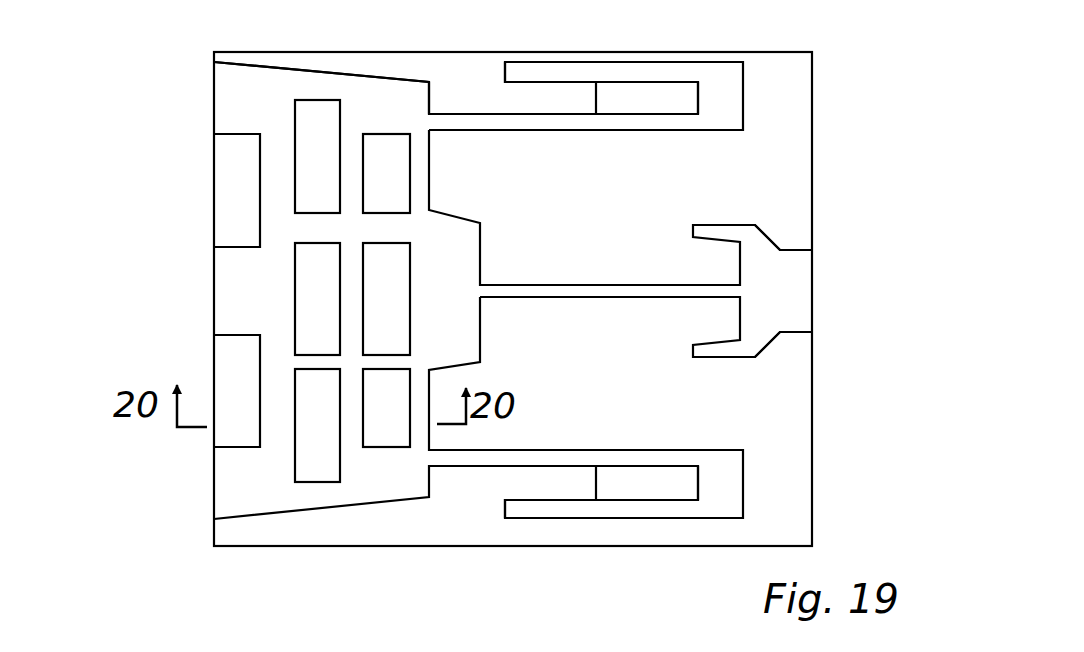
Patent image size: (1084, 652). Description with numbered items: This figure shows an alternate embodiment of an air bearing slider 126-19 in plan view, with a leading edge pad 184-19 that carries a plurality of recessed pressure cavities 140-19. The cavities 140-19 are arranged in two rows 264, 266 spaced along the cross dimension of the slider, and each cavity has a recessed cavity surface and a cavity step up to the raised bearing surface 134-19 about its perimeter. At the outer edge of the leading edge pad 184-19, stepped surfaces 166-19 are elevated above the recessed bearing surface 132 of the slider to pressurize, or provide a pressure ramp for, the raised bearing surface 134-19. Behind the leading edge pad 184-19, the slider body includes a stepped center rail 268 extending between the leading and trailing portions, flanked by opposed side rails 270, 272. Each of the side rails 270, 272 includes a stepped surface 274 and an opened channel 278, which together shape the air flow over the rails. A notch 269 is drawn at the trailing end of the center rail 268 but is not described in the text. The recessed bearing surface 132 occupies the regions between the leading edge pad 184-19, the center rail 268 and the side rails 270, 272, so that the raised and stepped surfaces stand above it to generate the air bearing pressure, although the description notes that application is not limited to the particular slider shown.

The slider 126-19 is at (591, 50).
The recessed bearing surface 132 is at (513, 290).
The raised bearing surface 134-19 is at (404, 92).
The recessed pressure cavities 140-19 is at (310, 120).
The stepped surface 166-19 is at (228, 198).
The leading edge pad 184-19 is at (317, 70).
The row of recessed pressure cavities 264 is at (310, 482).
The row of recessed pressure cavities 266 is at (373, 448).
The stepped center rail 268 is at (620, 297).
The notch 269 is at (775, 242).
The side rail 270 is at (513, 72).
The side rail 272 is at (640, 518).
The stepped surface 274 is at (687, 78).
The opened channel 278 is at (577, 100).